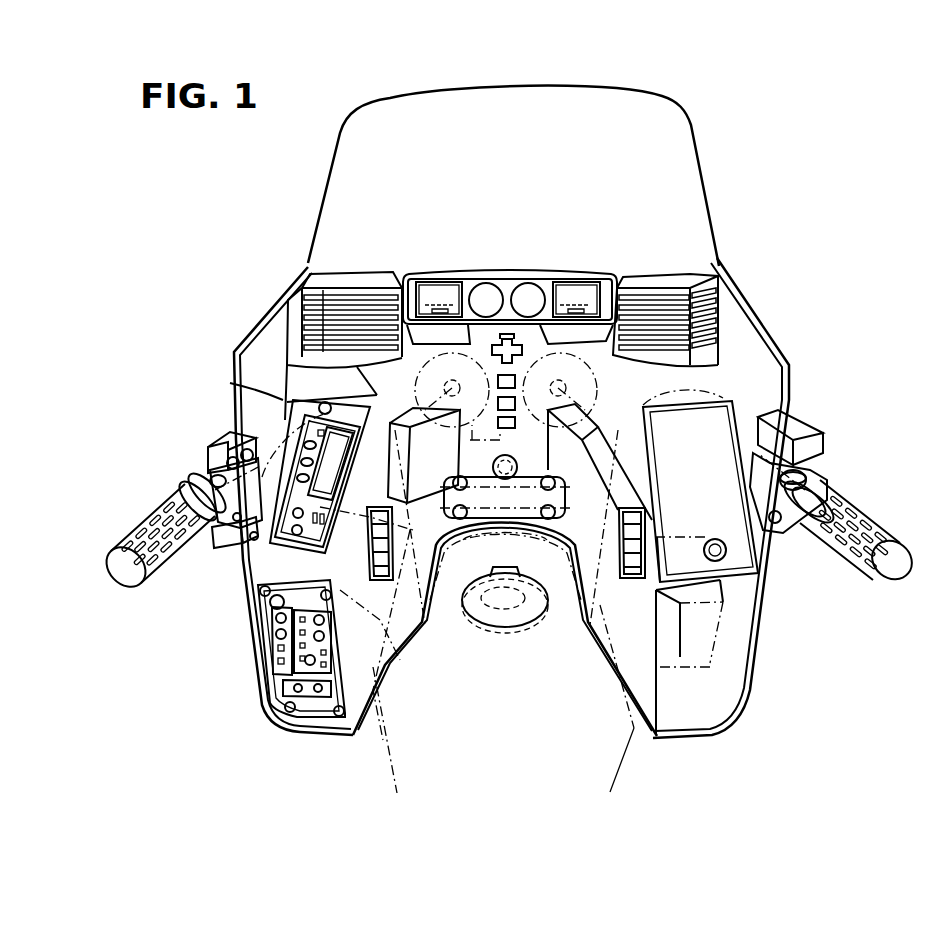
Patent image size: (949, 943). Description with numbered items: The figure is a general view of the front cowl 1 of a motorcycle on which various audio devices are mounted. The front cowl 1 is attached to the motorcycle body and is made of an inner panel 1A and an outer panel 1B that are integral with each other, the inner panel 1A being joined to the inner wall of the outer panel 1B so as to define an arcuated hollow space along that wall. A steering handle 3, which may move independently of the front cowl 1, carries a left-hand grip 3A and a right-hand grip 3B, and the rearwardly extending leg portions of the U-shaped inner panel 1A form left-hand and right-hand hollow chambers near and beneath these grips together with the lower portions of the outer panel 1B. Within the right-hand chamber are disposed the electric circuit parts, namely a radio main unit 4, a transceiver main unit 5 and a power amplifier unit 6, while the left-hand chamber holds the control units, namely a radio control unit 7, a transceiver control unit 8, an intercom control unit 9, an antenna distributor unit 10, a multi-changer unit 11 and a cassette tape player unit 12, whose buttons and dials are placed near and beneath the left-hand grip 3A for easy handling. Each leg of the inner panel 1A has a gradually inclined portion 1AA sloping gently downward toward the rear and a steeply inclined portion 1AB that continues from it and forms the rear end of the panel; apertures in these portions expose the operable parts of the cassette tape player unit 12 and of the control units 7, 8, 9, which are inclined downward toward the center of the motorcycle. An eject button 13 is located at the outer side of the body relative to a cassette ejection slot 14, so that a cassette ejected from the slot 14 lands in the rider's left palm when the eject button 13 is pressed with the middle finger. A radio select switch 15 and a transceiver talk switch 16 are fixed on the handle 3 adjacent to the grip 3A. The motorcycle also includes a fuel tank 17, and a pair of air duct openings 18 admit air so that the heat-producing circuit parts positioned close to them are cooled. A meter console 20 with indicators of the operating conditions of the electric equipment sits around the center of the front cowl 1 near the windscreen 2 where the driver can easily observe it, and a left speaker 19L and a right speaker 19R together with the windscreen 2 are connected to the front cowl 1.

The front cowl 1 is at (263, 316).
The inner panel 1A is at (436, 542).
The gradually inclined portion 1AA is at (283, 400).
The steeply inclined portion 1AB is at (258, 608).
The outer panel 1B is at (770, 594).
The windscreen 2 is at (697, 185).
The steering handle 3 is at (685, 398).
The left-hand grip 3A is at (127, 580).
The right-hand grip 3B is at (893, 580).
The radio main unit 4 is at (710, 625).
The transceiver main unit 5 is at (645, 470).
The power amplifier unit 6 is at (608, 404).
The radio control unit 7 is at (330, 672).
The transceiver control unit 8 is at (280, 650).
The intercom control unit 9 is at (282, 690).
The antenna distributor unit 10 is at (327, 667).
The multi-changer unit 11 is at (402, 410).
The cassette tape player unit 12 is at (303, 422).
The eject button 13 is at (305, 462).
The cassette ejection slot 14 is at (393, 522).
The radio select switch 15 is at (207, 452).
The transceiver talk switch 16 is at (223, 538).
The fuel tank 17 is at (608, 766).
The air duct openings 18 is at (452, 598).
The left speaker 19L is at (316, 290).
The right speaker 19R is at (685, 292).
The meter console 20 is at (505, 275).